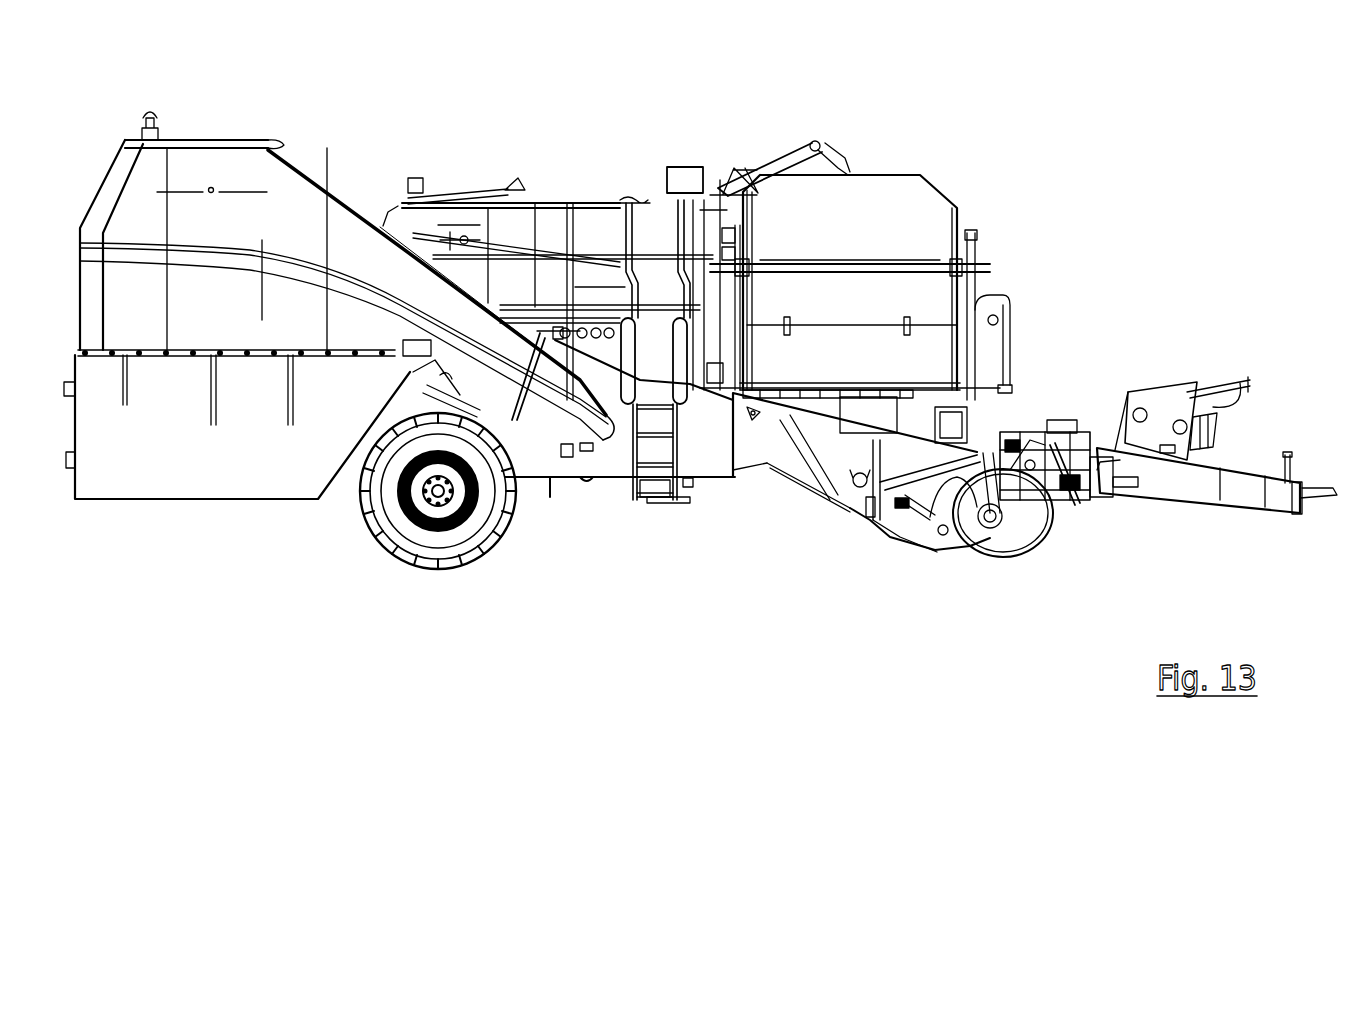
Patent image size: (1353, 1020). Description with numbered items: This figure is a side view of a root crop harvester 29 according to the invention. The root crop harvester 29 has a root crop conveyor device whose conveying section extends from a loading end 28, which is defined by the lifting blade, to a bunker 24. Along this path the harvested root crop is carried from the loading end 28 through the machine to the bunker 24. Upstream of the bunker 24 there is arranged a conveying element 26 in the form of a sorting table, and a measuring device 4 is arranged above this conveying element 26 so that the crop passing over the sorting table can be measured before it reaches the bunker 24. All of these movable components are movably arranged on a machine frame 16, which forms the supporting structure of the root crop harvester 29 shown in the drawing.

The root crop harvester 29 is at (195, 730).
The machine frame 16 is at (567, 313).
The conveying element 26 is at (639, 177).
The measuring device 4 is at (688, 183).
The bunker 24 is at (895, 160).
The loading end 28 is at (1037, 546).